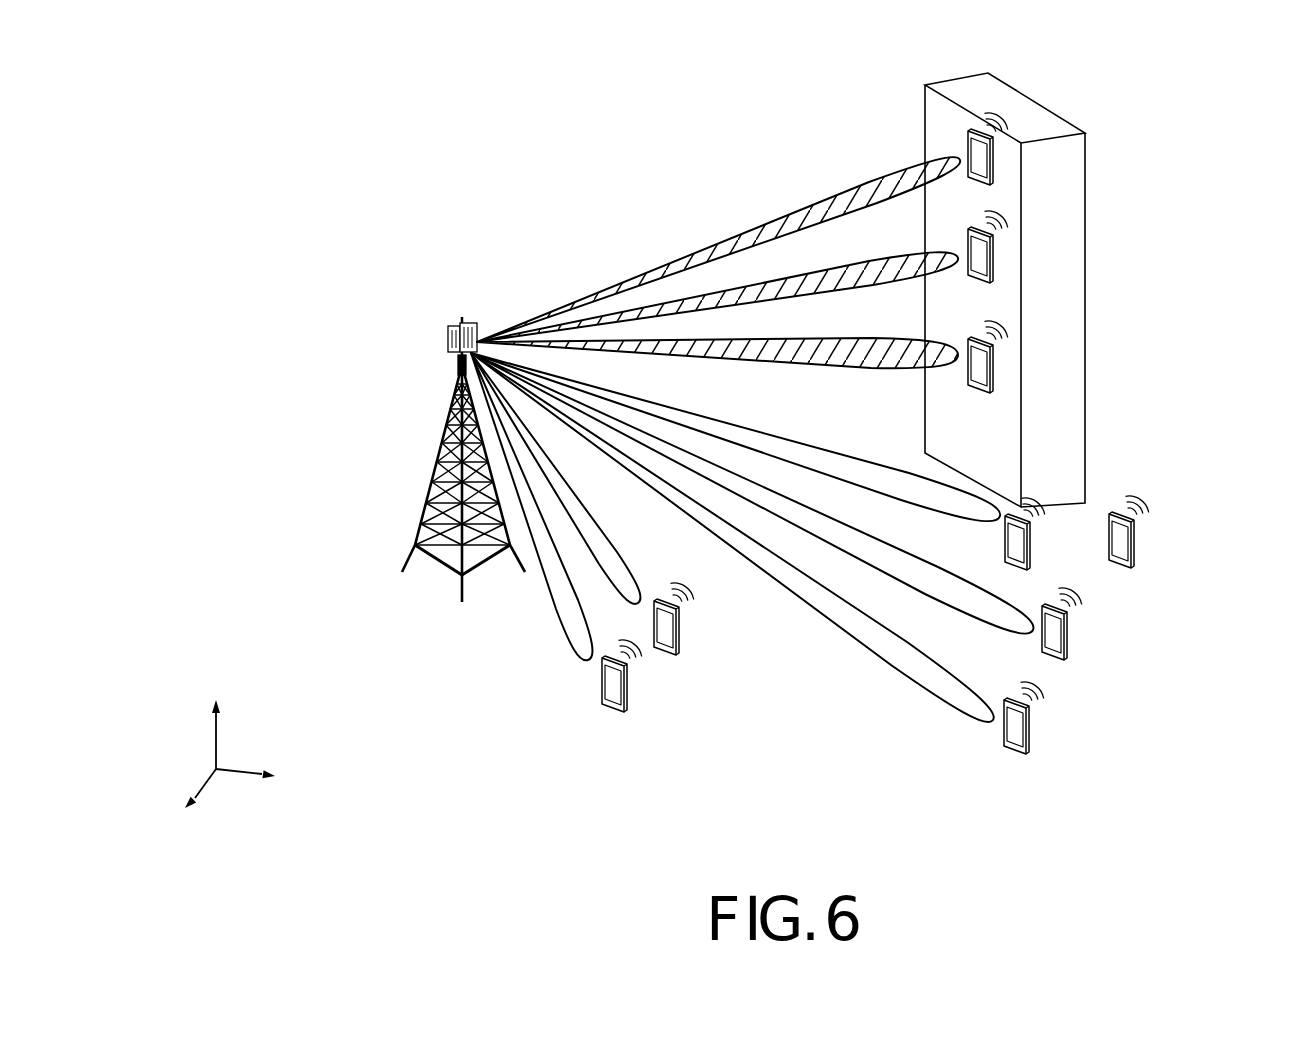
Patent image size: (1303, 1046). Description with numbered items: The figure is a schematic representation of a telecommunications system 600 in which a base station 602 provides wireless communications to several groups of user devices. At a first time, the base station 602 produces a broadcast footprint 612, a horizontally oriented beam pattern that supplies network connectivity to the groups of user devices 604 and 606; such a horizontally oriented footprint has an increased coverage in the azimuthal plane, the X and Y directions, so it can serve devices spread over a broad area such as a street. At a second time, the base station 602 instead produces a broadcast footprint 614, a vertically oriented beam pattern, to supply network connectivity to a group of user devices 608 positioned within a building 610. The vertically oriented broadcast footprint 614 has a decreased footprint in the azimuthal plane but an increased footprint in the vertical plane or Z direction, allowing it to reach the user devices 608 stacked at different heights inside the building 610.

The system 600 is at (245, 142).
The base station 602 is at (420, 515).
The group of user devices 604 is at (684, 692).
The group of user devices 606 is at (1117, 650).
The group of user devices 608 is at (1015, 263).
The building 610 is at (1031, 98).
The broadcast footprint 612 is at (799, 430).
The broadcast footprint 614 is at (712, 226).